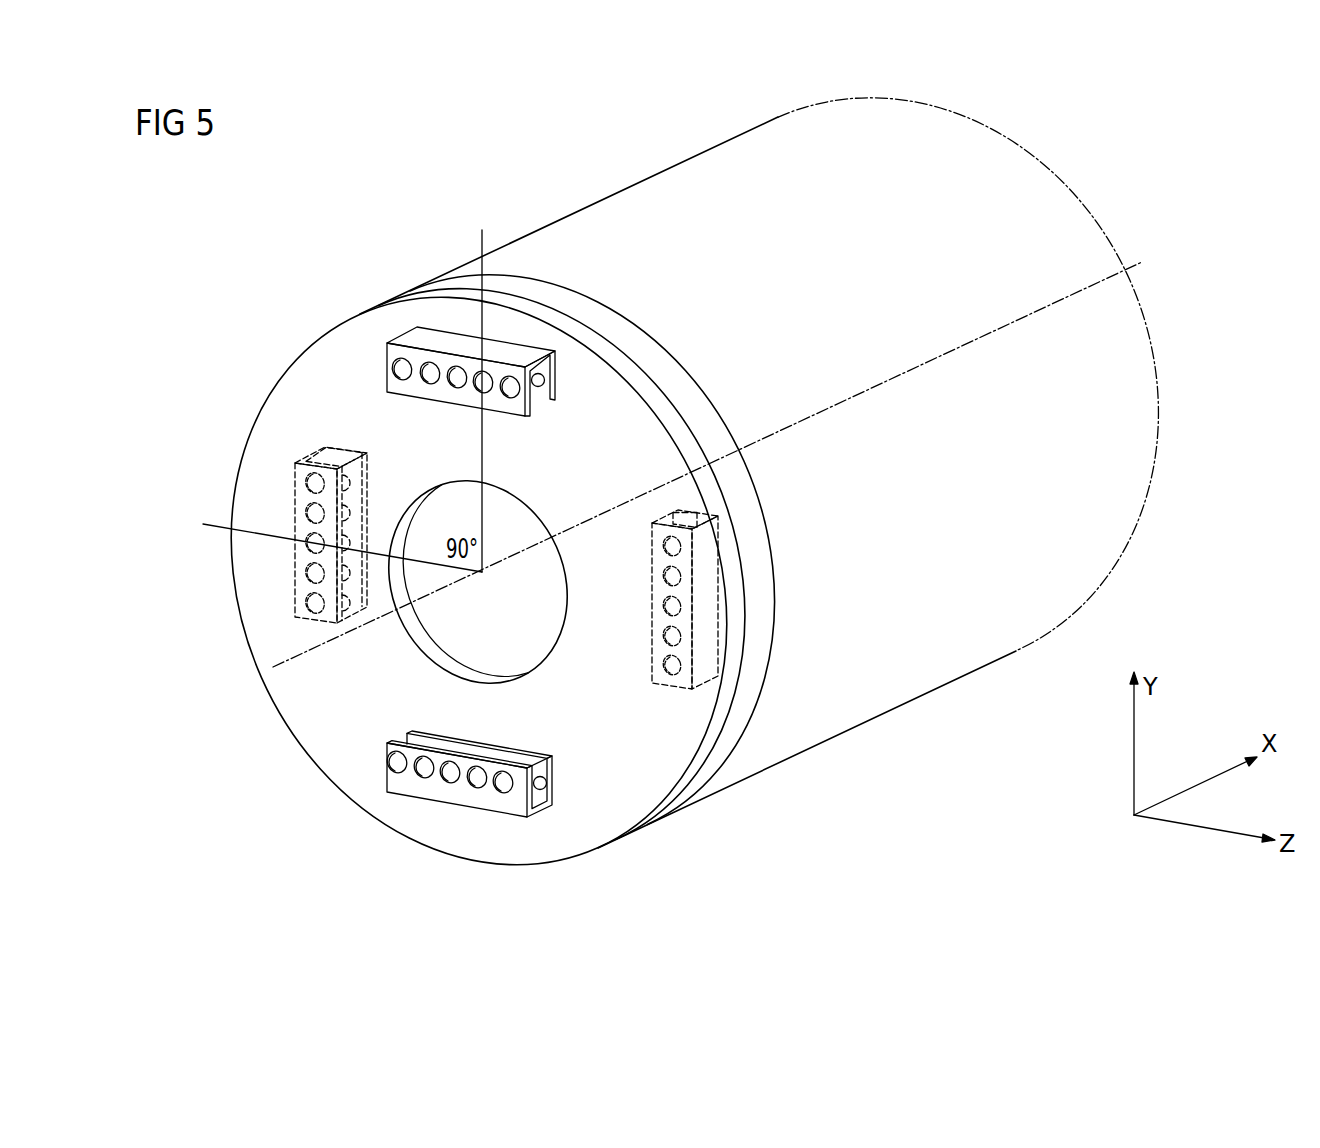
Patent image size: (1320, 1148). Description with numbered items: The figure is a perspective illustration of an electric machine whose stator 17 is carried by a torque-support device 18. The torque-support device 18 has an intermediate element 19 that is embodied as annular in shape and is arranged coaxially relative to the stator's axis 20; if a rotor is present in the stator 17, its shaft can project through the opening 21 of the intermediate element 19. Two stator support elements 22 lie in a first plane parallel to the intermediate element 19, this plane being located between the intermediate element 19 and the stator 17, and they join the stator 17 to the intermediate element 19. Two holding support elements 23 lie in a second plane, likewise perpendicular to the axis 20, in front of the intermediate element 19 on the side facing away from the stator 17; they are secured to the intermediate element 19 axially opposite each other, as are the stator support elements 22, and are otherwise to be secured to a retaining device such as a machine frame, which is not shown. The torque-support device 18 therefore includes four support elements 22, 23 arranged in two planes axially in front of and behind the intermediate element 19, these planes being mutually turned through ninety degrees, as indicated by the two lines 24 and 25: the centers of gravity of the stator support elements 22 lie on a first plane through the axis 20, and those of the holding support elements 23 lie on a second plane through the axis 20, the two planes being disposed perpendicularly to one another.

The stator 17 is at (642, 193).
The torque-support device 18 is at (289, 315).
The intermediate element 19 is at (272, 426).
The axis 20 is at (941, 354).
The opening 21 is at (432, 643).
The stator support elements 22 is at (350, 453).
The holding support elements 23 is at (417, 392).
The line 24 is at (484, 447).
The line 25 is at (207, 523).